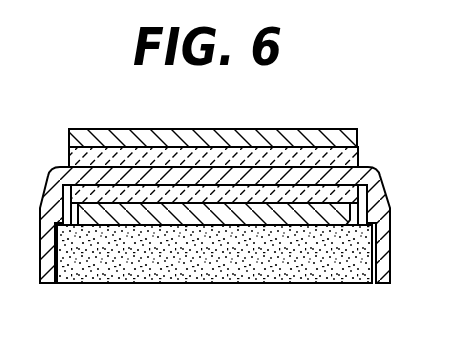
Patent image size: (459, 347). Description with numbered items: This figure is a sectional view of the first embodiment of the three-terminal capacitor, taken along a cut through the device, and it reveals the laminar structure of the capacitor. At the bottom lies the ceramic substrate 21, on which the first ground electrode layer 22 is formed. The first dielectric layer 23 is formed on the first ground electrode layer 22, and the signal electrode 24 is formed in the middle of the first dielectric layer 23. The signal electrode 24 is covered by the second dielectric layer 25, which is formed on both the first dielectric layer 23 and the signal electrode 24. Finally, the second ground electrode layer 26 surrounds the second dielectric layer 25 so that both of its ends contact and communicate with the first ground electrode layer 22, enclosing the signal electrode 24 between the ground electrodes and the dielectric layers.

The ceramic substrate 21 is at (207, 257).
The first ground electrode layer 22 is at (248, 215).
The first dielectric layer 23 is at (305, 193).
The signal electrode 24 is at (367, 173).
The second dielectric layer 25 is at (331, 150).
The second ground electrode layer 26 is at (302, 135).